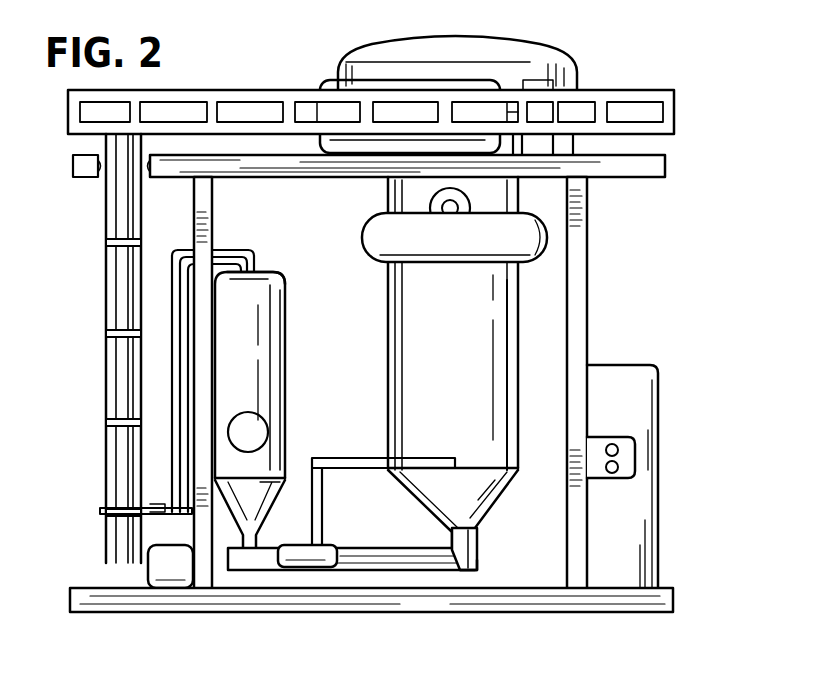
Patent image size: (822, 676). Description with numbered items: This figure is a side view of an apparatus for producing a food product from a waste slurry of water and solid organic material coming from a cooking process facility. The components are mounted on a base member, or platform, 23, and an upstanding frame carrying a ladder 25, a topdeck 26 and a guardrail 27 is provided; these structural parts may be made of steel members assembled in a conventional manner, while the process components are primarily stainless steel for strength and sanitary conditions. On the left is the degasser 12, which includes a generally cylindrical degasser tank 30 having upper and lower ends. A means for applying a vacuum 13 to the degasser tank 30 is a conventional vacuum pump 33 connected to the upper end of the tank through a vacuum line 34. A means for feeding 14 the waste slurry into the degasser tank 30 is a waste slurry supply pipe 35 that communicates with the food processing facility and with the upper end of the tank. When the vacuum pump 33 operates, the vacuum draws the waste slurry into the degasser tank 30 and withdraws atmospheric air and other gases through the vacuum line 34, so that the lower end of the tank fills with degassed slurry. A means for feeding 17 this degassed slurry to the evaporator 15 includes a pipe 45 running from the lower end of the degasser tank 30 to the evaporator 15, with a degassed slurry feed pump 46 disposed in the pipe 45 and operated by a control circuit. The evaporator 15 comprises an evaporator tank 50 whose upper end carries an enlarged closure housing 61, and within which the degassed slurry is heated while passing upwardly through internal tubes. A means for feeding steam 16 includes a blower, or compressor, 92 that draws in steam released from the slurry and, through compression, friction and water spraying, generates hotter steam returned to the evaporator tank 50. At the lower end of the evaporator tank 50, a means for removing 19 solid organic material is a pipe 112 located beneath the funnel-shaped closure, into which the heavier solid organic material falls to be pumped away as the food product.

The degasser 12 is at (291, 410).
The means for applying a vacuum 13 is at (262, 255).
The means for feeding the waste slurry 14 is at (162, 508).
The evaporator 15 is at (498, 362).
The means for feeding steam 16 is at (362, 234).
The means for feeding degassed slurry 17 is at (325, 458).
The means for removing solid organic material 19 is at (480, 545).
The base member 23 is at (587, 600).
The ladder 25 is at (108, 378).
The topdeck 26 is at (665, 163).
The guardrail 27 is at (615, 90).
The degasser tank 30 is at (286, 285).
The vacuum pump 33 is at (148, 583).
The vacuum line 34 is at (240, 250).
The waste slurry supply pipe 35 is at (147, 506).
The pipe 45 is at (352, 460).
The degassed slurry feed pump 46 is at (335, 568).
The evaporator tank 50 is at (520, 333).
The enlarged closure housing 61 is at (488, 33).
The blower 92 is at (318, 85).
The pipe 112 is at (468, 573).